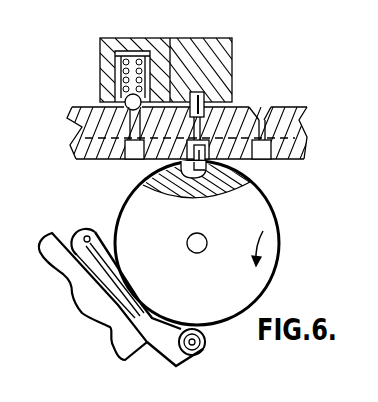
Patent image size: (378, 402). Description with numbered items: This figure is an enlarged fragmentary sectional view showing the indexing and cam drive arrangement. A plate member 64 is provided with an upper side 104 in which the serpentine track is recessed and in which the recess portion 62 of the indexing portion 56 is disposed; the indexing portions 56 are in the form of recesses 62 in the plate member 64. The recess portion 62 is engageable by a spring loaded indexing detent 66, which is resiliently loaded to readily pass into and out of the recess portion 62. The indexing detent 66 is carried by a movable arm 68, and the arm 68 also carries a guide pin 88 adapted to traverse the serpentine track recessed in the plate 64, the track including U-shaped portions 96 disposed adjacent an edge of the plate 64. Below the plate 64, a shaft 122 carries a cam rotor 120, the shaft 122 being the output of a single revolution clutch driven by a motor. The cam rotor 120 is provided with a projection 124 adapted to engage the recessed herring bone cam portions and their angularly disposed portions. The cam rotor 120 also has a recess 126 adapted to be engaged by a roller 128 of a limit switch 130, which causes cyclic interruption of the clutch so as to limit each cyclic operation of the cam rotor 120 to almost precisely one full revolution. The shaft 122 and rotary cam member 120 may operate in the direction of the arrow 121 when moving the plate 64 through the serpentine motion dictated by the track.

The indexing portion 56 is at (127, 113).
The recess portion 62 is at (272, 106).
The plate member 64 is at (300, 146).
The indexing detent 66 is at (208, 98).
The movable arm 68 is at (133, 38).
The guide pin 88 is at (250, 107).
The U-shaped portion 96 is at (270, 130).
The upper side 104 is at (90, 103).
The cam rotor 120 is at (270, 282).
The arrow 121 is at (276, 247).
The shaft 122 is at (199, 244).
The projection 124 is at (262, 133).
The recess 126 is at (184, 192).
The roller 128 is at (197, 327).
The limit switch 130 is at (90, 297).